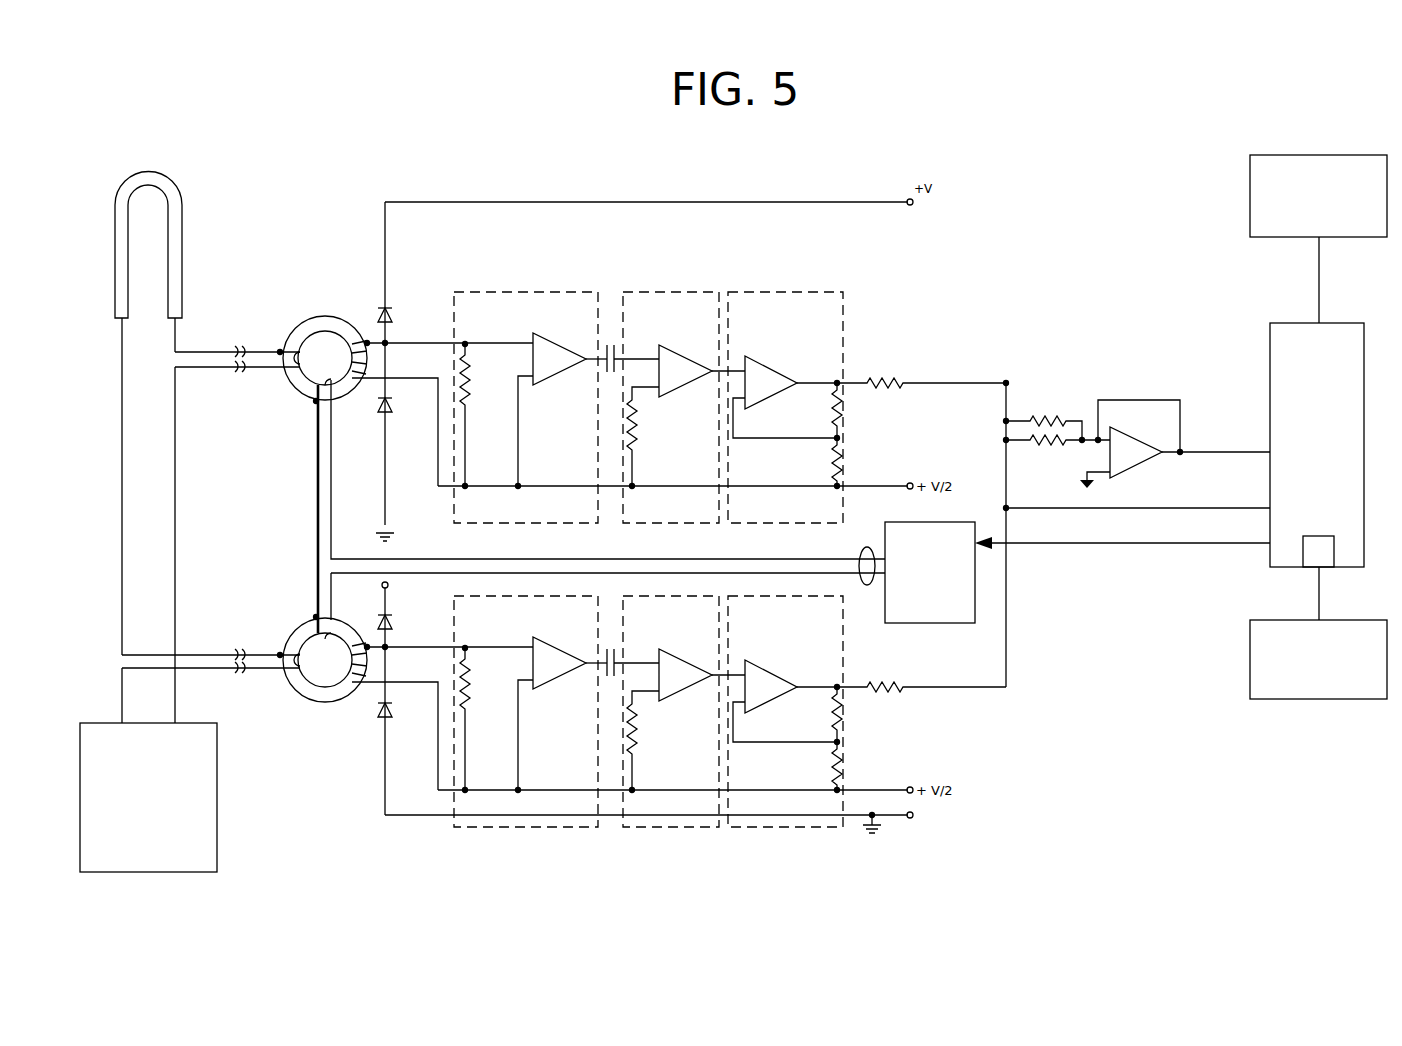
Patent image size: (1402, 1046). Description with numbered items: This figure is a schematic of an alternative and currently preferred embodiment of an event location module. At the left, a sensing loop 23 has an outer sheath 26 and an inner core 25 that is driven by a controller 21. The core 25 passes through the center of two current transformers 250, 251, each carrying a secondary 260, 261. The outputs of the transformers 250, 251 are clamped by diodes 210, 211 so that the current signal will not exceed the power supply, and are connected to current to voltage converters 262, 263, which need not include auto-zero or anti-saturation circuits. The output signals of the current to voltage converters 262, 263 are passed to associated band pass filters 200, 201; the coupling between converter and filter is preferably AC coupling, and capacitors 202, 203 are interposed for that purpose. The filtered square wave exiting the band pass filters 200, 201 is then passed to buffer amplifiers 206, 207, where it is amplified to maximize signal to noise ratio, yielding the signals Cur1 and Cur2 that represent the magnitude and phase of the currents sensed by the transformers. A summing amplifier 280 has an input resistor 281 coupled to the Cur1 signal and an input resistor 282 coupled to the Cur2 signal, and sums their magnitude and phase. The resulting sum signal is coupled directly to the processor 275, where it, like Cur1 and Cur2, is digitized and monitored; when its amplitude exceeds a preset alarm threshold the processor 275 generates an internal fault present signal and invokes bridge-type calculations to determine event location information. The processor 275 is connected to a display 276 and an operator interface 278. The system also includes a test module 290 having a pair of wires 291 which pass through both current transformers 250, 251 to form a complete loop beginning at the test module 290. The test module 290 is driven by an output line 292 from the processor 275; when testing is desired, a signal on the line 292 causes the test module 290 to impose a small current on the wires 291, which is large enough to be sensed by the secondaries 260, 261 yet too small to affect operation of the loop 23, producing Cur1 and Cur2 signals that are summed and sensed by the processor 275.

The controller 21 is at (217, 797).
The sensing loop 23 is at (180, 202).
The inner core 25 is at (176, 452).
The outer sheath 26 is at (183, 248).
The band pass filter 200 is at (656, 291).
The band pass filter 201 is at (656, 830).
The capacitor 202 is at (612, 342).
The capacitor 203 is at (612, 680).
The buffer amplifier 206 is at (783, 291).
The buffer amplifier 207 is at (780, 830).
The diodes 210 is at (379, 313).
The diodes 211 is at (379, 620).
The current transformer 250 is at (290, 328).
The current transformer 251 is at (305, 698).
The secondary 260 is at (443, 377).
The secondary 261 is at (443, 680).
The current to voltage converter 262 is at (538, 291).
The current to voltage converter 263 is at (540, 830).
The processor 275 is at (1269, 348).
The display 276 is at (1249, 165).
The operator interface 278 is at (1249, 658).
The summing amplifier 280 is at (1140, 466).
The input resistor 281 is at (1050, 416).
The input resistor 282 is at (1050, 445).
The test module 290 is at (962, 520).
The wires 291 is at (867, 588).
The output line 292 is at (1120, 546).